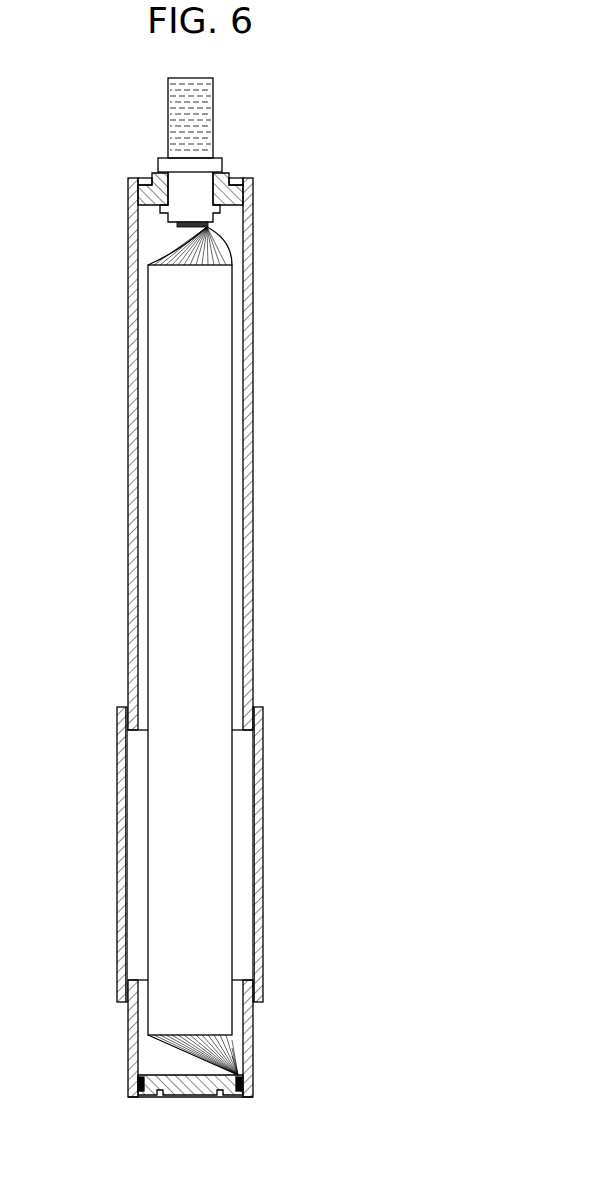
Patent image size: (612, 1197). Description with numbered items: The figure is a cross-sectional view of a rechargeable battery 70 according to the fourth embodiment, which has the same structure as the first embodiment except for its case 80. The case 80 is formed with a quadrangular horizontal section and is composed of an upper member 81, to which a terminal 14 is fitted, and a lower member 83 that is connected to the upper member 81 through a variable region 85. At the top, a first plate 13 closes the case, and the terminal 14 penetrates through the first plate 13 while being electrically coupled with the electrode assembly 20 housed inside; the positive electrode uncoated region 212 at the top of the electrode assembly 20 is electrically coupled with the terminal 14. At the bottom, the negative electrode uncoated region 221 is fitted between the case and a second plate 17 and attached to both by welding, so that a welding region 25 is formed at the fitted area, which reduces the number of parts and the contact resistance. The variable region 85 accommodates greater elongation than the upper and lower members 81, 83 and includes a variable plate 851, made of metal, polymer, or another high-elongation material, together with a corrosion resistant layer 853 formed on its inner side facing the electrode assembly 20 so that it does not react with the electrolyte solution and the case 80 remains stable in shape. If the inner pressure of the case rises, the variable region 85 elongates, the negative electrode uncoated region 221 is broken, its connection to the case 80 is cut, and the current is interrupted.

The rechargeable battery 70 is at (92, 100).
The terminal 14 is at (214, 100).
The first plate 13 is at (236, 190).
The positive electrode uncoated region 212 is at (180, 256).
The electrode assembly 20 is at (212, 592).
The case 80 is at (227, 637).
The upper member 81 is at (250, 490).
The variable region 85 is at (227, 854).
The variable plate 851 is at (262, 830).
The corrosion resistant layer 853 is at (258, 866).
The lower member 83 is at (248, 1036).
The second plate 17 is at (192, 1097).
The welding region 25 is at (243, 1081).
The negative electrode uncoated region 221 is at (205, 1053).